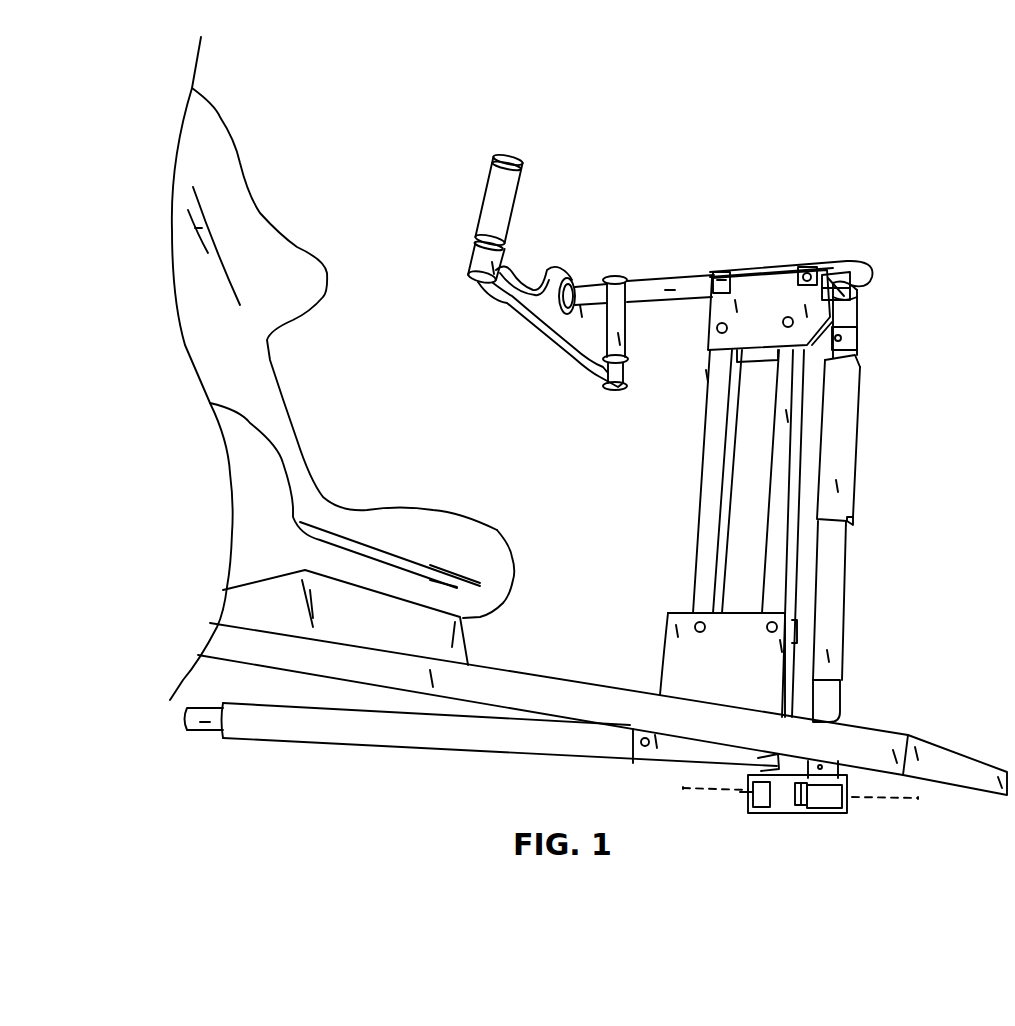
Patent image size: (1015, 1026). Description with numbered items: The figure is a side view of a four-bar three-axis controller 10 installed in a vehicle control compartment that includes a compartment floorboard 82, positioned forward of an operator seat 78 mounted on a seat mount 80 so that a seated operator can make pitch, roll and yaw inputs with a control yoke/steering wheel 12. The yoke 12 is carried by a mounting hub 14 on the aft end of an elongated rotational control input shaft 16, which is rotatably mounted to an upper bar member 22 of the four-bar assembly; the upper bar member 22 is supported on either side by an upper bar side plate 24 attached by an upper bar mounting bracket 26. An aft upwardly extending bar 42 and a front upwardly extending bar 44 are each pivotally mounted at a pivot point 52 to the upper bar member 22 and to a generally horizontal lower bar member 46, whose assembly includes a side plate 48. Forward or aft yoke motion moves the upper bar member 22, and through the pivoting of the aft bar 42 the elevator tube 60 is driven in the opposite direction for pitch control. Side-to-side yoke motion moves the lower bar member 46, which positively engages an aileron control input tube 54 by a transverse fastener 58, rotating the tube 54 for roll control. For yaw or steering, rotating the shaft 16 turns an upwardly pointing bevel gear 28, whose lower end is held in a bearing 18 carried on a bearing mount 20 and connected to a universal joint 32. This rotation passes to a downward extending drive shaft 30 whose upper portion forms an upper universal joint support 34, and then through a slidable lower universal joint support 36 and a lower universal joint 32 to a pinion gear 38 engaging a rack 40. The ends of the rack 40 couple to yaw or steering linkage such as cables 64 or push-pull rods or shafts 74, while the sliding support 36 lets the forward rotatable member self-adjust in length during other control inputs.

The four-bar 3-axis controller 10 is at (911, 185).
The control yoke/steering wheel 12 is at (550, 272).
The mounting hub 14 is at (587, 292).
The rotational control input shaft 16 is at (668, 285).
The bearing 18 is at (860, 293).
The bearing mount 20 is at (827, 272).
The upper bar member 22 is at (775, 265).
The upper bar side plate 24 is at (717, 313).
The upper bar mounting bracket 26 is at (712, 270).
The bevel gear 28 is at (862, 267).
The drive shaft 30 is at (855, 477).
The universal joint 32 is at (852, 348).
The upper universal joint support 34 is at (857, 380).
The lower universal joint support 36 is at (843, 660).
The pinion gear 38 is at (827, 797).
The rack 40 is at (783, 793).
The aft upwardly extending bar 42 is at (712, 458).
The front upwardly extending bar 44 is at (780, 493).
The lower bar member 46 is at (668, 627).
The side plate 48 is at (667, 658).
The pivot point 52 is at (721, 334).
The aileron control input tube 54 is at (345, 735).
The transverse fastener 58 is at (645, 750).
The elevator tube 60 is at (190, 728).
The cables 64 is at (730, 793).
The push-pull rods or shafts 74 is at (702, 793).
The operator seat 78 is at (480, 532).
The seat mount 80 is at (463, 653).
The compartment floorboard 82 is at (958, 768).